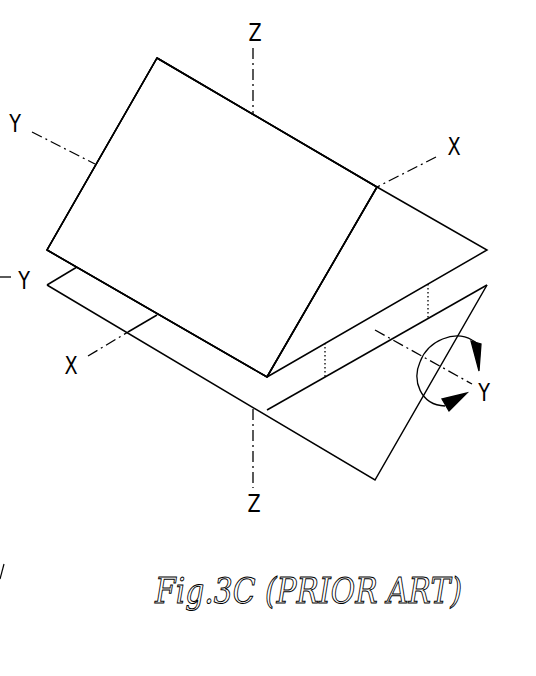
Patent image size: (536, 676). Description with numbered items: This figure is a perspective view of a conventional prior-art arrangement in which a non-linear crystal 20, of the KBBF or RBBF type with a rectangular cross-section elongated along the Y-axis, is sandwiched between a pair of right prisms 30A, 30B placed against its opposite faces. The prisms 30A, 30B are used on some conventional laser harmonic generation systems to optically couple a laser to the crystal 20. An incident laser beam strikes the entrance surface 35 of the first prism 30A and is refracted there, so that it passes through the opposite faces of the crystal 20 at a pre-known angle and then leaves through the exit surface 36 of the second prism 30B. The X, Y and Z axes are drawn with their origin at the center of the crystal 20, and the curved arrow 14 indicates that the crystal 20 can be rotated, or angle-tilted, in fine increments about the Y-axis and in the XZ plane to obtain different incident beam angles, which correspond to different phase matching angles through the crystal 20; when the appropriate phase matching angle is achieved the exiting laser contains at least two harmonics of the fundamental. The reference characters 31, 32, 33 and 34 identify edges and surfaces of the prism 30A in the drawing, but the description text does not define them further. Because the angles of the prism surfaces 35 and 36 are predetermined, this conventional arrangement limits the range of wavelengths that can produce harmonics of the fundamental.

The arrow 14 is at (473, 338).
The non-linear crystal 20 is at (466, 280).
The right prism 30A is at (444, 206).
The right prism 30B is at (421, 436).
The first edge of plate 31 is at (278, 127).
The second edge of plate 32 is at (213, 347).
The third edge of plate 33 is at (131, 104).
The surface region of frame 34 is at (438, 246).
The surface of prism 30A 35 is at (213, 221).
The surface of prism 30B 36 is at (397, 194).